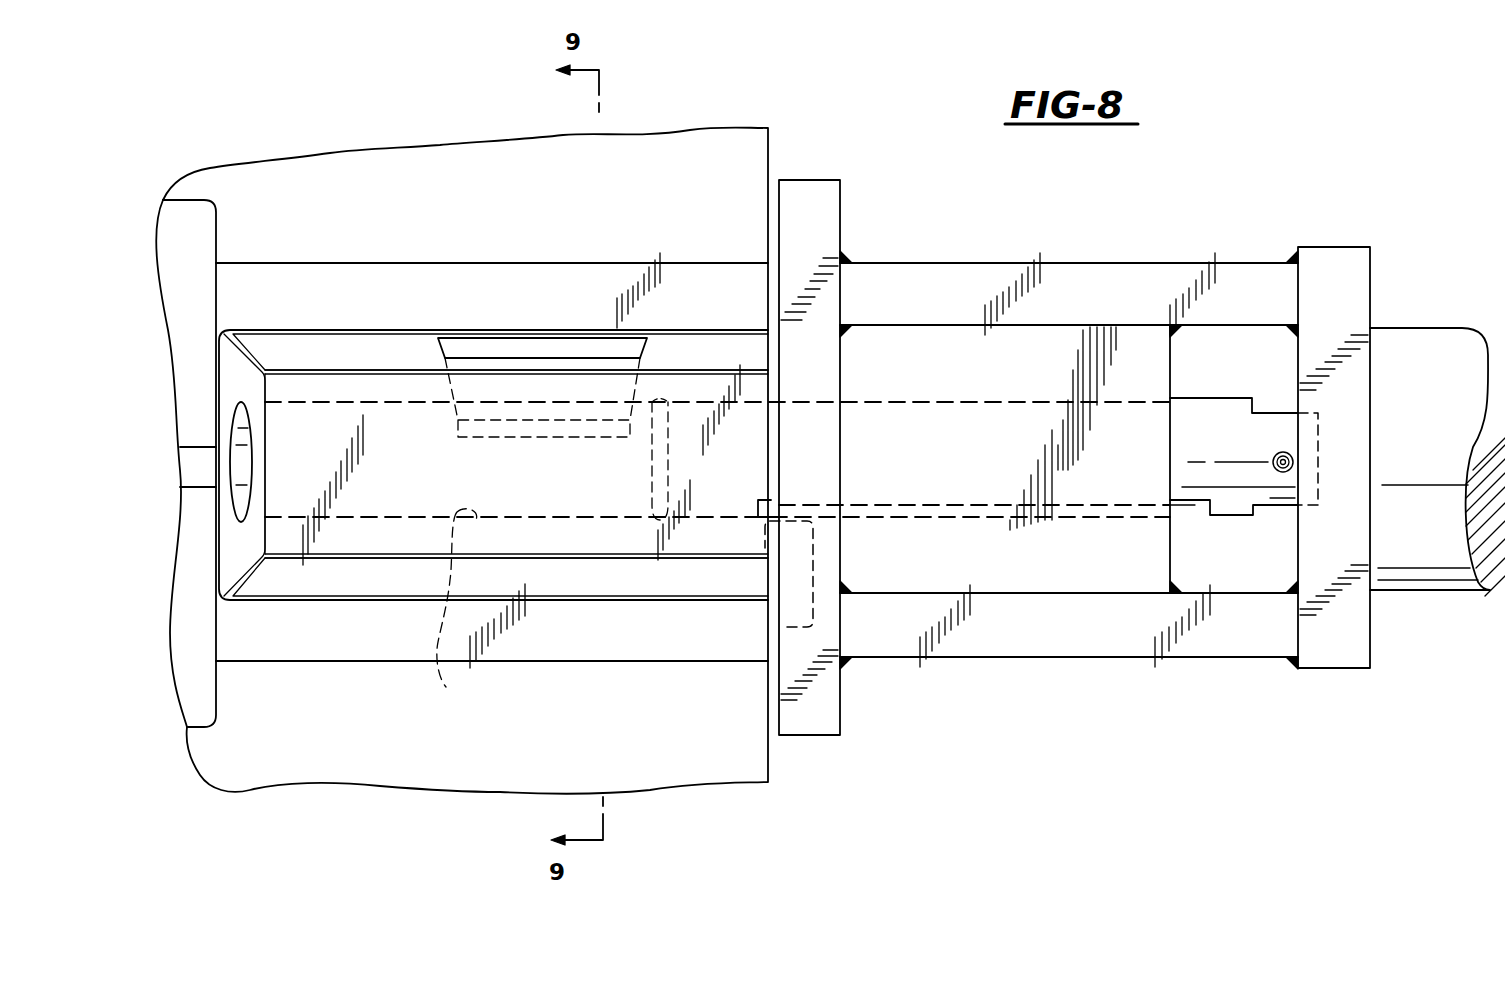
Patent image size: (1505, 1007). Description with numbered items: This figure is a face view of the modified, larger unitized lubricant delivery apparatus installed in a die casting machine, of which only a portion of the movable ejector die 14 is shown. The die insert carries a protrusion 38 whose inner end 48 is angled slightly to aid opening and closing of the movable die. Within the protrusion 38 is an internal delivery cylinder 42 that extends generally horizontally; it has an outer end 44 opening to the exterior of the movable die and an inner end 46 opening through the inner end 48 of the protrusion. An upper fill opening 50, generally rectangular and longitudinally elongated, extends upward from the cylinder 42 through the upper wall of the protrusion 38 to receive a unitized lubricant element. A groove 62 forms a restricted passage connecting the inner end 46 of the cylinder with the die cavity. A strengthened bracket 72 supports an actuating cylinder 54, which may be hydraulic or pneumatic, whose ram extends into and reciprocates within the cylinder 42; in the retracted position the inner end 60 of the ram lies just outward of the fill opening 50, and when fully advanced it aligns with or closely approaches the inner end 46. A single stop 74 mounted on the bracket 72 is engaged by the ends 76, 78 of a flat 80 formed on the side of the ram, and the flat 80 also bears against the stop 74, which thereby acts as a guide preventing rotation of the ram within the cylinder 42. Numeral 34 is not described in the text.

The movable ejector die 14 is at (779, 150).
The housing body 34 is at (341, 663).
The protrusion 38 is at (305, 585).
The delivery cylinder 42 is at (457, 605).
The outer end 44 is at (740, 403).
The inner end 46 is at (235, 432).
The inner end of the protrusion 48 is at (233, 356).
The upper fill opening 50 is at (514, 352).
The actuating cylinder 54 is at (1435, 350).
The inner end of the ram 60 is at (640, 512).
The groove 62 is at (193, 468).
The strengthened bracket 72 is at (1010, 263).
The stop 74 is at (813, 593).
The end of the flat 76 is at (763, 540).
The end of the flat 78 is at (1215, 512).
The flat 80 is at (1082, 505).